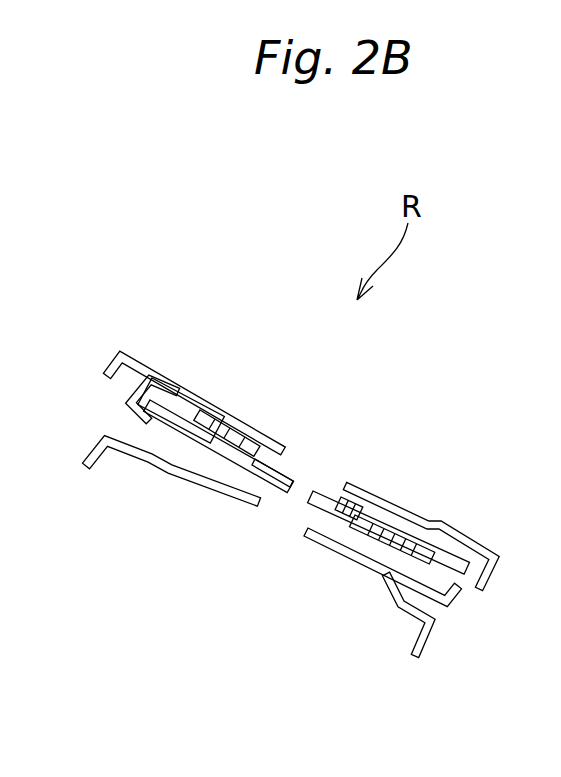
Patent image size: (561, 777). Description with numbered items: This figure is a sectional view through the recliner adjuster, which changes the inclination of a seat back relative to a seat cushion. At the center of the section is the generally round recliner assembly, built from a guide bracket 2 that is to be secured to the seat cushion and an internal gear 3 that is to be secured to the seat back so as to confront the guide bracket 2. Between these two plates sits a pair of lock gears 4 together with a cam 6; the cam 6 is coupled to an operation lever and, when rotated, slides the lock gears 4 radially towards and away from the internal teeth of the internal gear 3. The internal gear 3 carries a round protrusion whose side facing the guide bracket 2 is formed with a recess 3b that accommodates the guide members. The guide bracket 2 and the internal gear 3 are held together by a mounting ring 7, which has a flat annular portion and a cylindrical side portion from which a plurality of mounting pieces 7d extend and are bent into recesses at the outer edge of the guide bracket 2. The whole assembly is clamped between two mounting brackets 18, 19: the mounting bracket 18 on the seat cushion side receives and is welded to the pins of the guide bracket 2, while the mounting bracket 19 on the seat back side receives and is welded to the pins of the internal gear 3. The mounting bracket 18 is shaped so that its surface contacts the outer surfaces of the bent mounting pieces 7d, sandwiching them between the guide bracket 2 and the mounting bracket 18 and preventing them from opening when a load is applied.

The guide bracket 2 is at (227, 427).
The internal gear 3 is at (227, 472).
The recess 3b is at (203, 432).
The lock gear 4 is at (192, 400).
The cam 6 is at (283, 478).
The mounting ring 7 is at (133, 350).
The mounting piece 7d is at (161, 382).
The mounting bracket 18 is at (497, 553).
The mounting bracket 19 is at (397, 592).